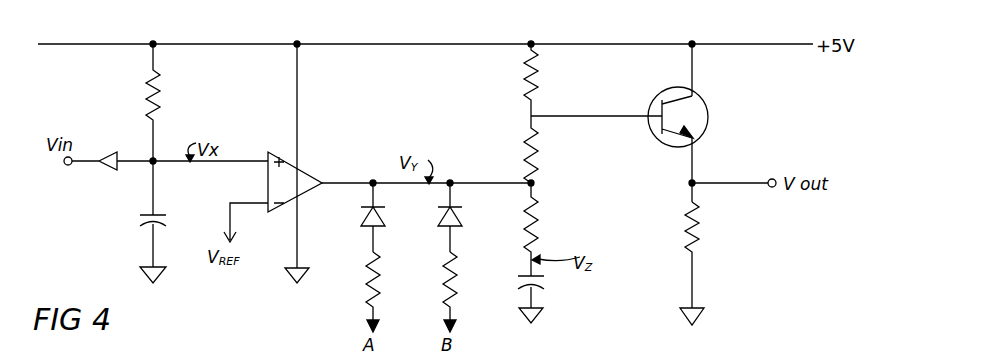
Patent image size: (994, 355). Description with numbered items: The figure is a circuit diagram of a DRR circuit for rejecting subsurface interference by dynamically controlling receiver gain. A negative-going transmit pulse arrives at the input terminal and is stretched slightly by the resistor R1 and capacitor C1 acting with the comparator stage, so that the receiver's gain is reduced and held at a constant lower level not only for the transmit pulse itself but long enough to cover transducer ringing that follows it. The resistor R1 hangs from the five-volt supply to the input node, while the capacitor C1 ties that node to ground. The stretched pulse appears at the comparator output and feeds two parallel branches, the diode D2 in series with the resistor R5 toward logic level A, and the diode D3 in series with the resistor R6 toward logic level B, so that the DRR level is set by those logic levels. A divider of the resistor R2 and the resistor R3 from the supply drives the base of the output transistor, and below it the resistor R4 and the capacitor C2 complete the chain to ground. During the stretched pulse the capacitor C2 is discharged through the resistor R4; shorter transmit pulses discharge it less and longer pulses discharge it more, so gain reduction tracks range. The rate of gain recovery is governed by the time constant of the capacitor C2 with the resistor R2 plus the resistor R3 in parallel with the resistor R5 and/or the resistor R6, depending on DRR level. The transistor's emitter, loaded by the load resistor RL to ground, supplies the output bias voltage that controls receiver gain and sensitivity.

The resistor R1 is at (166, 102).
The capacitor C1 is at (134, 222).
The diode D2 is at (360, 217).
The diode D3 is at (437, 217).
The resistor R5 is at (358, 292).
The resistor R6 is at (436, 292).
The resistor R2 is at (546, 80).
The resistor R3 is at (546, 149).
The resistor R4 is at (546, 229).
The capacitor C2 is at (544, 299).
The load resistor RL is at (702, 263).